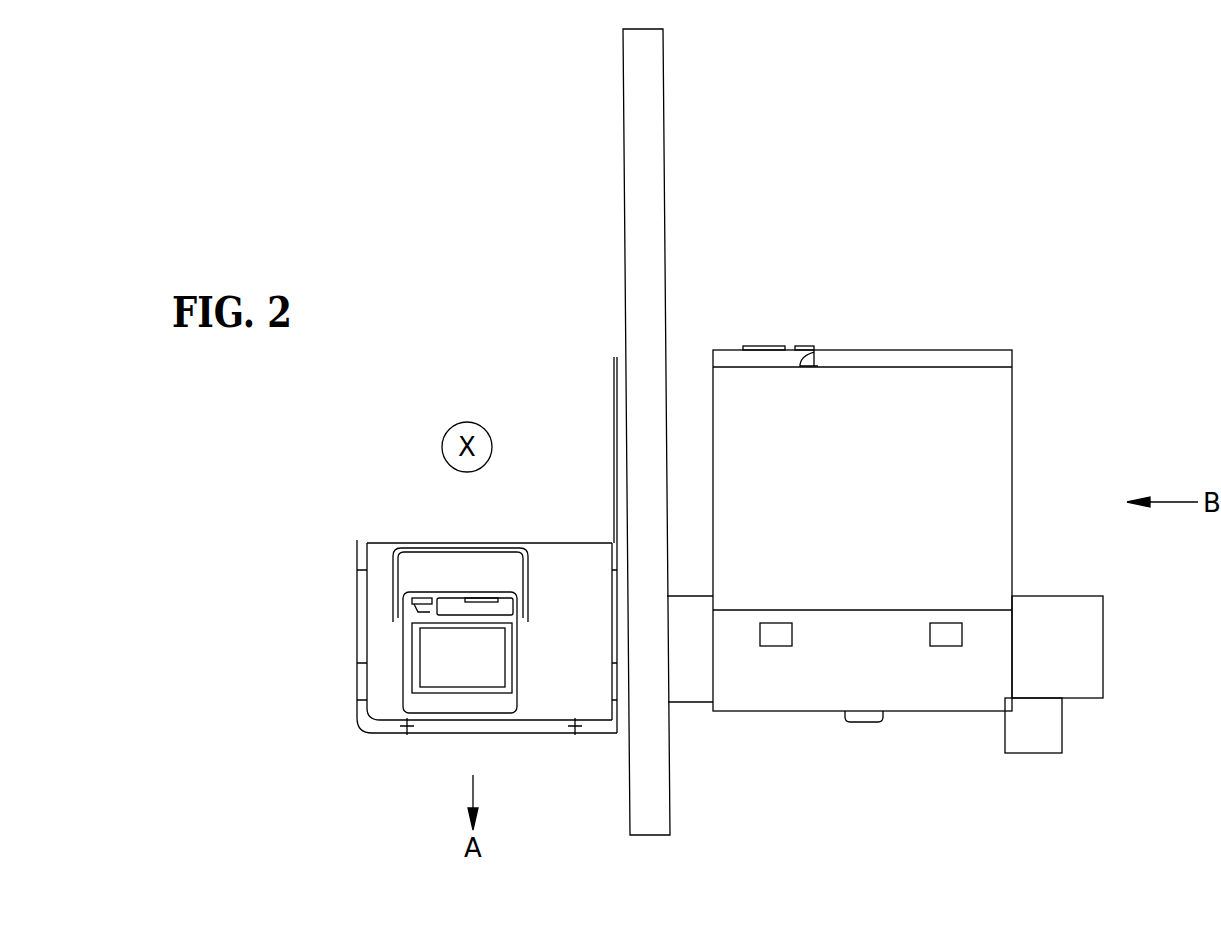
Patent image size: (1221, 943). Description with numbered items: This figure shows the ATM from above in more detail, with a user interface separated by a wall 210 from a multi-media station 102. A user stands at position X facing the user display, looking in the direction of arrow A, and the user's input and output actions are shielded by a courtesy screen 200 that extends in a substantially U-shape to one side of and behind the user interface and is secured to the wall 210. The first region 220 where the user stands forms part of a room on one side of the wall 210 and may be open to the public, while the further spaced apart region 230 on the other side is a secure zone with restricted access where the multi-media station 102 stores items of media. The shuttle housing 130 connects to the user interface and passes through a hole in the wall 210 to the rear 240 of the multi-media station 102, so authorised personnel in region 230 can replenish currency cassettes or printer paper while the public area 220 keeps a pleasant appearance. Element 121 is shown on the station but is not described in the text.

The multi-media station 102 is at (1072, 416).
The tab 121 is at (762, 345).
The shuttle housing 130 is at (687, 690).
The courtesy screen 200 is at (358, 645).
The wall 210 is at (637, 160).
The first region 220 is at (418, 190).
The further region 230 is at (968, 188).
The rear of the multi-media station 240 is at (877, 764).